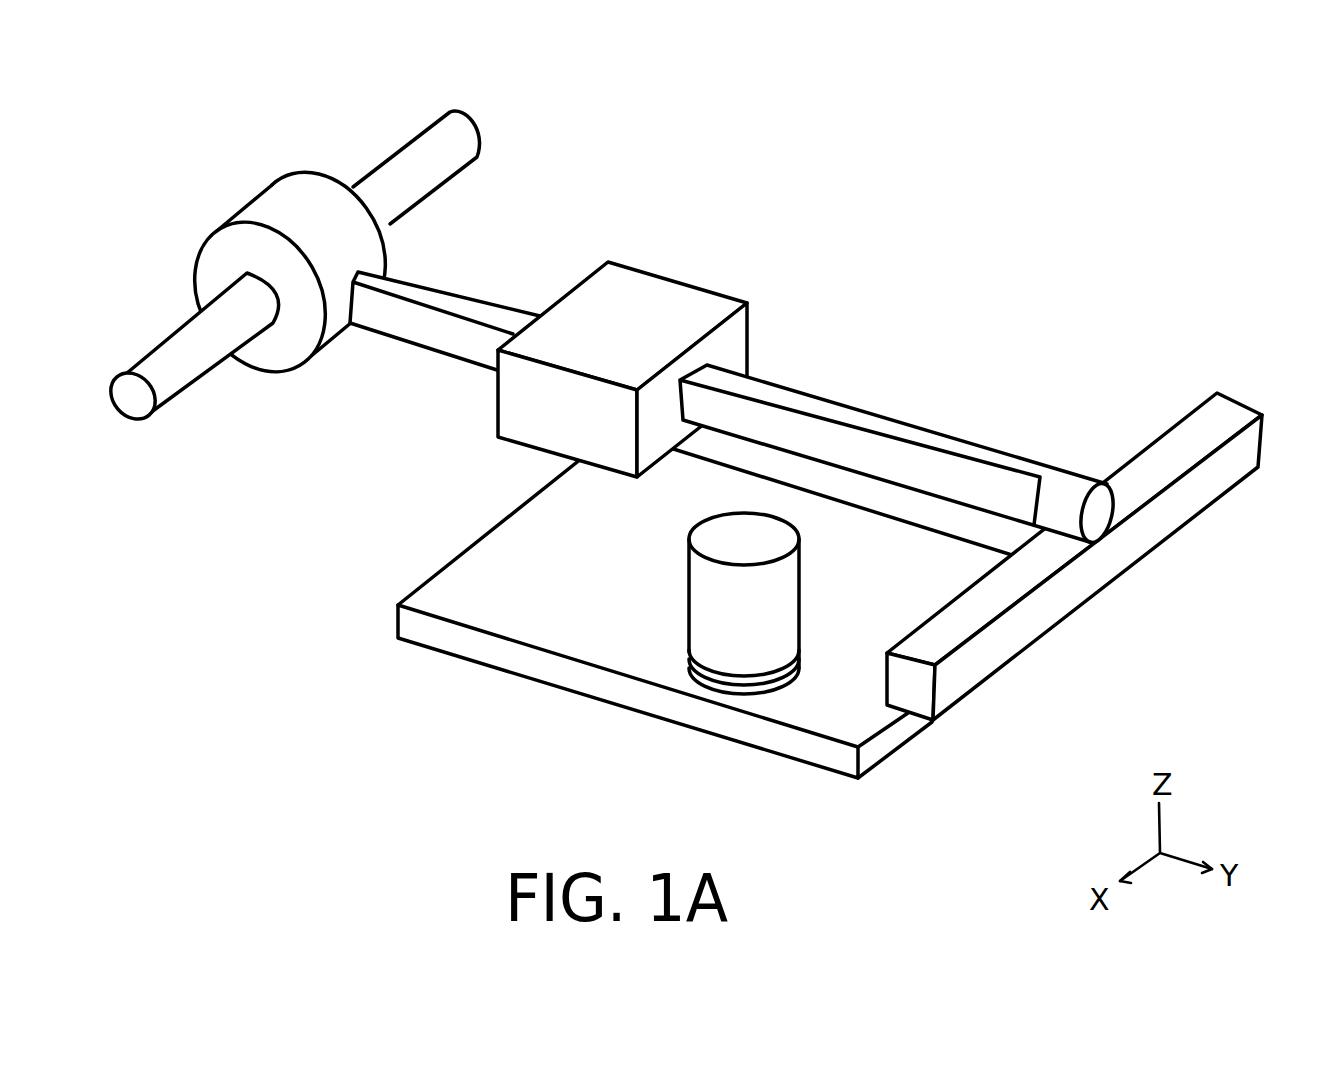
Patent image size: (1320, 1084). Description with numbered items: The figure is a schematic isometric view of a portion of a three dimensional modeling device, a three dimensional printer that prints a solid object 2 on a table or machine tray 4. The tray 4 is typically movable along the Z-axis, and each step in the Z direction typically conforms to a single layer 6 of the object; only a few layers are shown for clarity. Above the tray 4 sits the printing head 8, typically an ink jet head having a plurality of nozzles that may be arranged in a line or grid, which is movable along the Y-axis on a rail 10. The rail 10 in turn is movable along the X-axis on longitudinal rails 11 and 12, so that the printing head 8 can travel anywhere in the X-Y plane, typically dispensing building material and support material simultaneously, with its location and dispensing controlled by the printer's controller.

The solid object 2 is at (688, 573).
The tray 4 is at (463, 640).
The layer 6 is at (688, 661).
The printing head 8 is at (712, 296).
The rail 10 is at (995, 466).
The longitudinal rail 11 is at (960, 665).
The longitudinal rail 12 is at (437, 167).